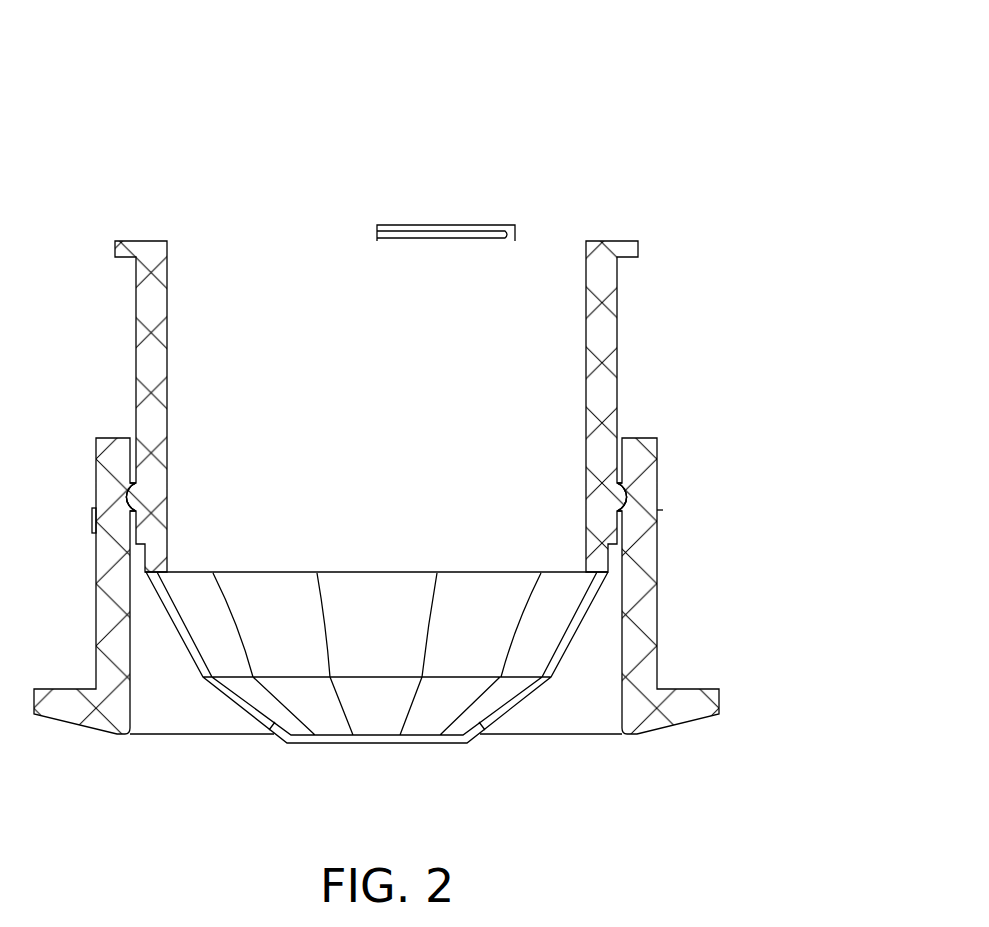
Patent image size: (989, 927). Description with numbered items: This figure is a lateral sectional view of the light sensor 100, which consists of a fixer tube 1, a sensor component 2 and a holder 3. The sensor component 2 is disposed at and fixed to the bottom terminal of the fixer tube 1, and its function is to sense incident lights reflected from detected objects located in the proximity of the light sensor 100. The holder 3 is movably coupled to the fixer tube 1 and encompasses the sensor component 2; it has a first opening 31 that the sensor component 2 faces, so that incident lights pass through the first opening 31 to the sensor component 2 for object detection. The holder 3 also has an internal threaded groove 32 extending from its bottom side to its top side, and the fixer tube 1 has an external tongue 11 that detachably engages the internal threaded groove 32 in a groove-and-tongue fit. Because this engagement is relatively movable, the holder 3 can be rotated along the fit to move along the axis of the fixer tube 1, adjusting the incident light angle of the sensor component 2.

The light sensor 100 is at (147, 88).
The fixer tube 1 is at (595, 357).
The external tongue 11 is at (620, 495).
The sensor component 2 is at (545, 622).
The holder 3 is at (652, 653).
The first opening 31 is at (523, 735).
The internal threaded groove 32 is at (633, 490).